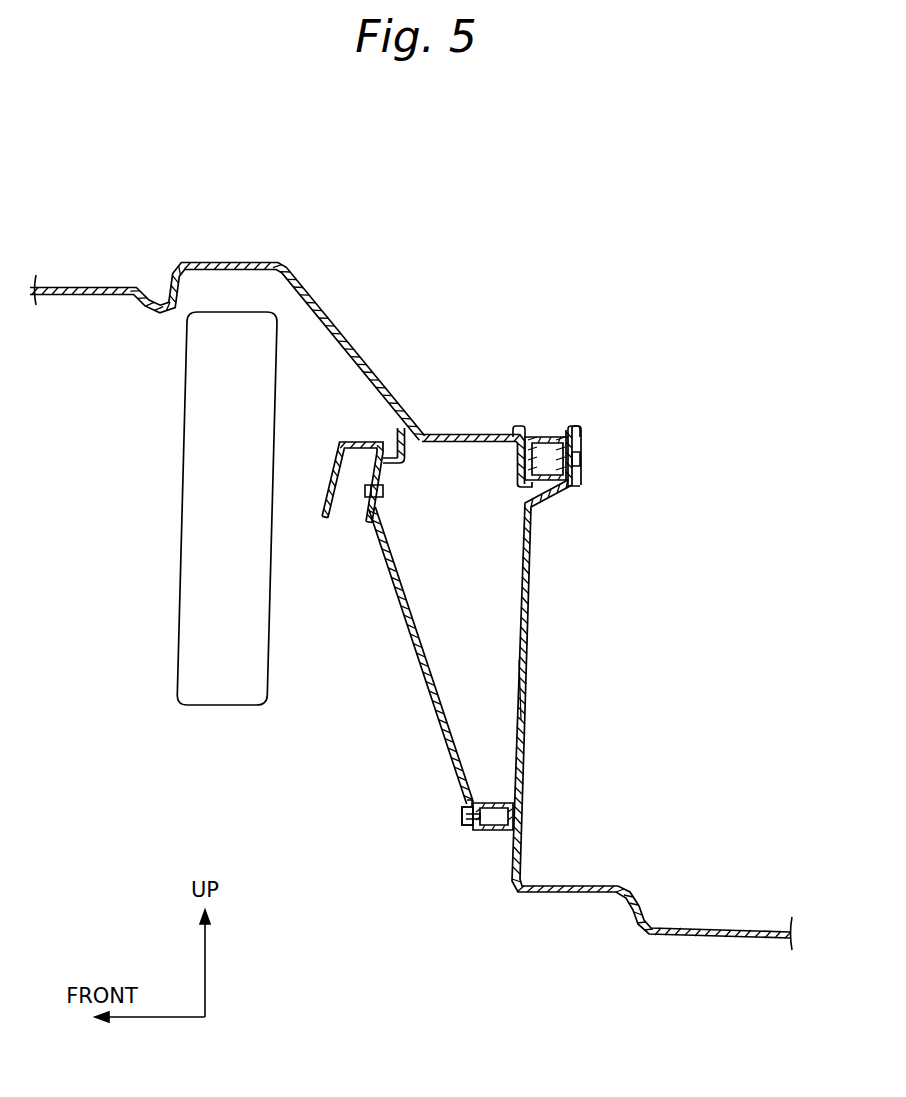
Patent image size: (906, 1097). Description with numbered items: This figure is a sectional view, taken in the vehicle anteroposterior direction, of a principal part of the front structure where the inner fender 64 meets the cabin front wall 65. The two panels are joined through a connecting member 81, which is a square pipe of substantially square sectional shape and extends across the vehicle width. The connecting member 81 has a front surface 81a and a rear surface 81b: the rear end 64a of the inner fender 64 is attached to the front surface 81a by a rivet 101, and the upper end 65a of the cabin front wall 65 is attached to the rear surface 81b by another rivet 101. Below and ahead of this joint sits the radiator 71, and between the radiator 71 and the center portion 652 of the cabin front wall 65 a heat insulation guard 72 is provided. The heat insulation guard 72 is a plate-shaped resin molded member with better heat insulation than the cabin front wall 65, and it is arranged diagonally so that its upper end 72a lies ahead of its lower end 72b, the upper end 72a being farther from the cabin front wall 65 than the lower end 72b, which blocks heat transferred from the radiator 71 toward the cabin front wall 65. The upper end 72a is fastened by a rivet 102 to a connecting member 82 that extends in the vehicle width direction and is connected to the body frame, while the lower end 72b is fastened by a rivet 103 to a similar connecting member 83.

The inner fender 64 is at (305, 292).
The rear end of the inner fender 64a is at (447, 432).
The radiator 71 is at (205, 497).
The heat insulation guard 72 is at (423, 675).
The upper end of the heat insulation guard 72a is at (363, 522).
The lower end of the heat insulation guard 72b is at (467, 803).
The connecting member 81 is at (548, 436).
The front surface of the connecting member 81a is at (514, 428).
The rear surface of the connecting member 81b is at (580, 452).
The connecting member 82 is at (405, 455).
The connecting member 83 is at (490, 803).
The cabin front wall 65 is at (537, 628).
The upper end of the cabin front wall 65a is at (579, 430).
The center portion of the cabin front wall 652 is at (525, 682).
The rivet 101 is at (490, 434).
The rivet 102 is at (385, 491).
The rivet 103 is at (462, 818).